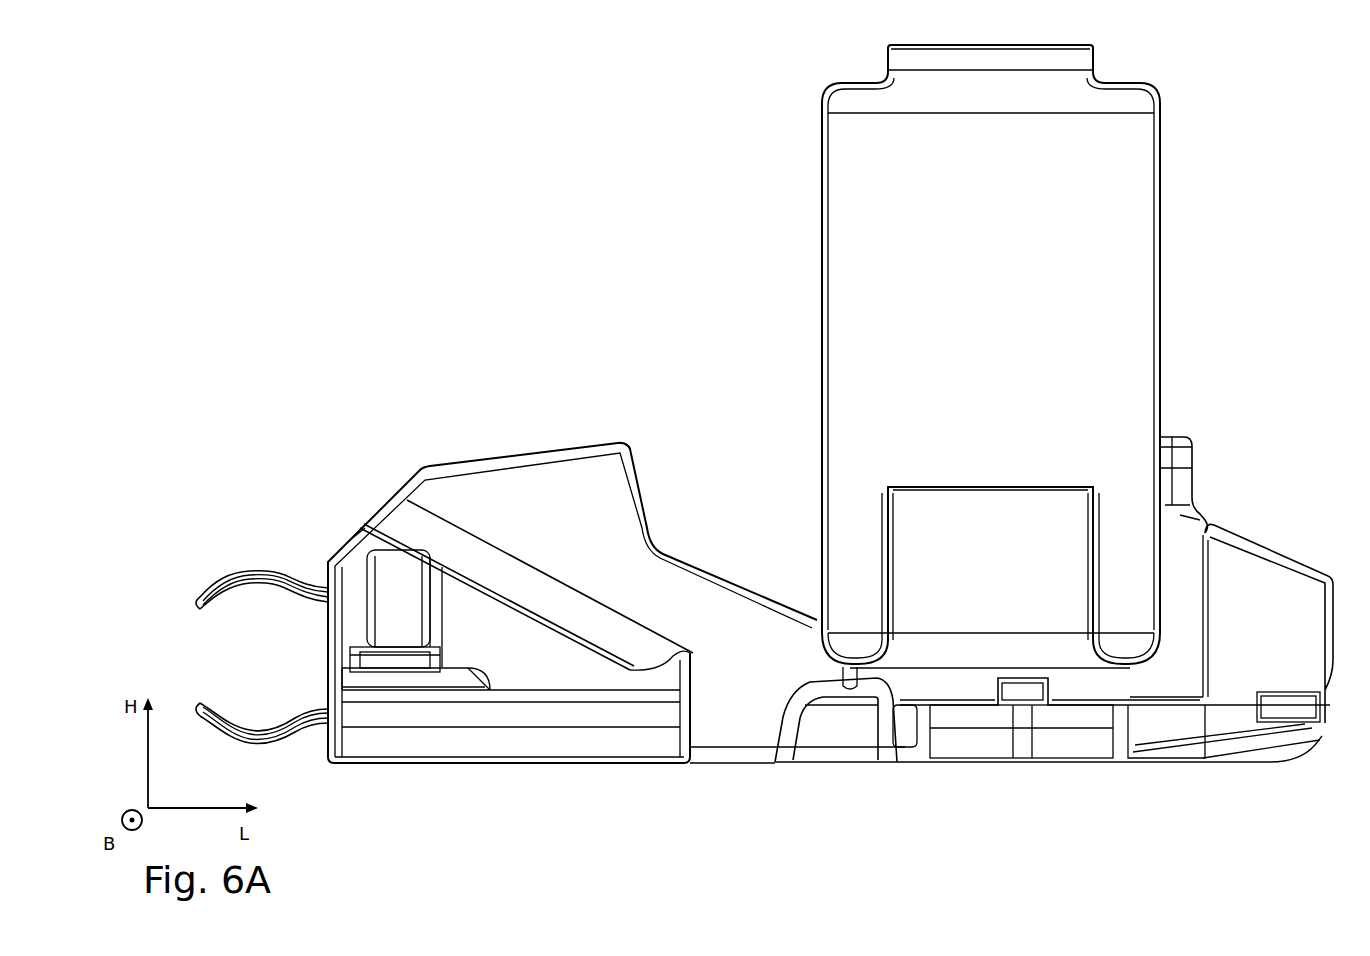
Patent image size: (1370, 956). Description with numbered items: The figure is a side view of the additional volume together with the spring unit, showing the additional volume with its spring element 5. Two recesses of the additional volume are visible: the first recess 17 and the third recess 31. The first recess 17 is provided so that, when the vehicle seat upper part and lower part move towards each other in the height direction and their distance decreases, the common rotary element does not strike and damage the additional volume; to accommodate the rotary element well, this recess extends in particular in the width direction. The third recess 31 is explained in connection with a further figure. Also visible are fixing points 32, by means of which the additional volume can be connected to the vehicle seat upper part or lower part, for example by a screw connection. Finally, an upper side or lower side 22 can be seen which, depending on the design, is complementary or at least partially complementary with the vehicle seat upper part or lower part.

The spring element 5 is at (823, 272).
The first recess 17 is at (764, 555).
The third recess 31 is at (670, 380).
The fixing points 32 is at (485, 692).
The upper side or lower side 22 is at (743, 733).